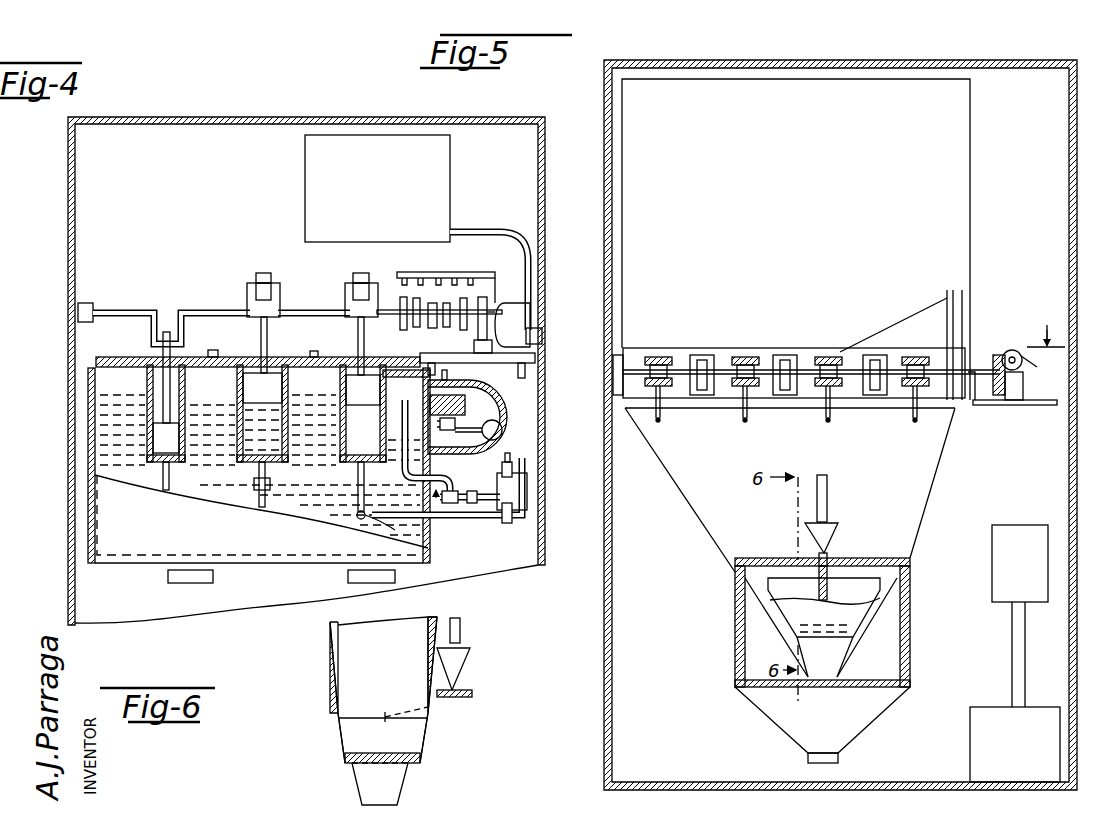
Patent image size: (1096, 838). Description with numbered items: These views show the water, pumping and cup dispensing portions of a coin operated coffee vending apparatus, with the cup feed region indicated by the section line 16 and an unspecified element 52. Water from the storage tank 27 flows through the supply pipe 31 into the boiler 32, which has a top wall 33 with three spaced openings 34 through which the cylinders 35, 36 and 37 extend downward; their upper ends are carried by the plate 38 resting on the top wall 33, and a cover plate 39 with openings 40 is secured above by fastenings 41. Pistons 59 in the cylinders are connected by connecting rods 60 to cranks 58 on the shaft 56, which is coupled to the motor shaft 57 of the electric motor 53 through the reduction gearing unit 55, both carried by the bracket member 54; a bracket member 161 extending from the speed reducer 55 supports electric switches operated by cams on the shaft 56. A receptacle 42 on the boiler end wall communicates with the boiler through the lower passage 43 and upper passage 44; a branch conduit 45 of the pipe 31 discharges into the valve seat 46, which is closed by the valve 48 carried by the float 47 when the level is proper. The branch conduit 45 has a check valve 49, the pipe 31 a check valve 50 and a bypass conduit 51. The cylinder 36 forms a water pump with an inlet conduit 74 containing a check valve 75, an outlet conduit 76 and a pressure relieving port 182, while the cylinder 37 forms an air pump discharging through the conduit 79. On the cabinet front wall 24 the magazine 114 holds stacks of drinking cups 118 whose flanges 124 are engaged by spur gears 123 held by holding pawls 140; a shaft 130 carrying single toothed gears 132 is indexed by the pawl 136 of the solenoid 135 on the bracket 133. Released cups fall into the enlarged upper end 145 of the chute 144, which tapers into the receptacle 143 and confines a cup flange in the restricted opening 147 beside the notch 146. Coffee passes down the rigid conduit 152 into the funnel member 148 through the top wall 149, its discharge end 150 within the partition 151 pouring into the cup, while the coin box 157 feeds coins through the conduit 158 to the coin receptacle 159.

In FIG. 4, the storage tank 27 is at (452, 200).
In FIG. 4, the supply pipe 31 is at (533, 262).
In FIG. 4, the electric motor 53 is at (542, 332).
In FIG. 4, the bracket member 161 is at (460, 273).
In FIG. 4, the shaft 56 is at (390, 308).
In FIG. 4, the reduction gearing unit 55 is at (480, 335).
In FIG. 4, the motor shaft 57 is at (532, 302).
In FIG. 4, the bracket member 54 is at (536, 360).
In FIG. 4, the plate 38 is at (200, 360).
In FIG. 4, the cover plate 39 is at (395, 362).
In FIG. 4, the top wall 33 is at (92, 322).
In FIG. 4, the cranks 58 is at (182, 305).
In FIG. 4, the connecting rods 60 is at (256, 296).
In FIG. 4, the fastenings 41 is at (316, 352).
In FIG. 4, the openings 40 is at (357, 356).
In FIG. 4, the pistons 59 is at (266, 425).
In FIG. 4, the boiler 32 is at (273, 553).
In FIG. 4, the openings 34 is at (150, 382).
In FIG. 4, the cylinder 37 is at (207, 389).
In FIG. 4, the port 182 is at (236, 403).
In FIG. 4, the cylinder 35 is at (338, 396).
In FIG. 4, the cylinder 36 is at (288, 413).
In FIG. 4, the valve 48 is at (406, 385).
In FIG. 4, the upper passage 44 is at (466, 383).
In FIG. 4, the valve seat 46 is at (466, 410).
In FIG. 4, the receptacle 42 is at (457, 407).
In FIG. 4, the float 47 is at (502, 430).
In FIG. 4, the lower passage 43 is at (446, 445).
In FIG. 4, the branch conduit 45 is at (403, 482).
In FIG. 4, the check valve 49 is at (450, 506).
In FIG. 4, the bypass conduit 51 is at (528, 497).
In FIG. 4, the valve 52 is at (513, 470).
In FIG. 4, the check valve 50 is at (505, 524).
In FIG. 4, the conduit 79 is at (165, 488).
In FIG. 4, the inlet conduit 74 is at (250, 490).
In FIG. 4, the check valve 75 is at (262, 498).
In FIG. 4, the outlet conduit 76 is at (283, 502).
In FIG. 5, the magazine 114 is at (968, 197).
In FIG. 5, the section line 16 is at (624, 340).
In FIG. 5, the shaft 130 is at (690, 352).
In FIG. 5, the single toothed gears 132 is at (785, 400).
In FIG. 5, the spur gear 123 is at (767, 360).
In FIG. 5, the holding pawl 140 is at (903, 400).
In FIG. 5, the upper end 145 is at (703, 410).
In FIG. 5, the pawl 136 is at (1000, 352).
In FIG. 5, the solenoid 135 is at (1029, 371).
In FIG. 5, the bracket 133 is at (1040, 406).
In FIG. 5, the chute 144 is at (716, 512).
In FIG. 6, the chute 144 is at (328, 654).
In FIG. 5, the receptacle 143 is at (780, 712).
In FIG. 5, the rigid conduit 152 is at (828, 510).
In FIG. 6, the rigid conduit 152 is at (462, 630).
In FIG. 5, the funnel member 148 is at (831, 561).
In FIG. 6, the funnel member 148 is at (452, 686).
In FIG. 5, the top wall 149 is at (908, 563).
In FIG. 6, the top wall 149 is at (473, 694).
In FIG. 5, the notch 146 is at (882, 598).
In FIG. 6, the notch 146 is at (336, 718).
In FIG. 5, the discharge end 150 is at (790, 596).
In FIG. 6, the discharge end 150 is at (391, 729).
In FIG. 5, the partition 151 is at (800, 578).
In FIG. 6, the partition 151 is at (340, 735).
In FIG. 5, the flange 124 is at (847, 645).
In FIG. 6, the flange 124 is at (352, 760).
In FIG. 5, the restricted opening 147 is at (770, 642).
In FIG. 6, the restricted opening 147 is at (425, 765).
In FIG. 5, the drinking cups 118 is at (826, 664).
In FIG. 6, the drinking cups 118 is at (362, 782).
In FIG. 5, the coin box 157 is at (1015, 530).
In FIG. 5, the conduit 158 is at (1011, 661).
In FIG. 5, the coin receptacle 159 is at (985, 751).
In FIG. 5, the cabinet front wall 24 is at (630, 765).